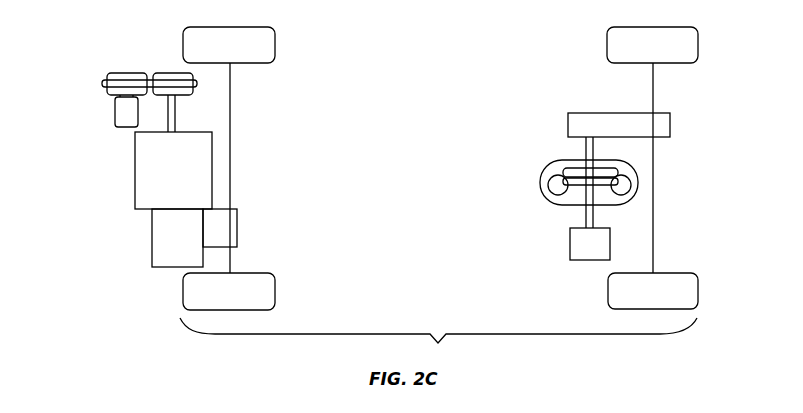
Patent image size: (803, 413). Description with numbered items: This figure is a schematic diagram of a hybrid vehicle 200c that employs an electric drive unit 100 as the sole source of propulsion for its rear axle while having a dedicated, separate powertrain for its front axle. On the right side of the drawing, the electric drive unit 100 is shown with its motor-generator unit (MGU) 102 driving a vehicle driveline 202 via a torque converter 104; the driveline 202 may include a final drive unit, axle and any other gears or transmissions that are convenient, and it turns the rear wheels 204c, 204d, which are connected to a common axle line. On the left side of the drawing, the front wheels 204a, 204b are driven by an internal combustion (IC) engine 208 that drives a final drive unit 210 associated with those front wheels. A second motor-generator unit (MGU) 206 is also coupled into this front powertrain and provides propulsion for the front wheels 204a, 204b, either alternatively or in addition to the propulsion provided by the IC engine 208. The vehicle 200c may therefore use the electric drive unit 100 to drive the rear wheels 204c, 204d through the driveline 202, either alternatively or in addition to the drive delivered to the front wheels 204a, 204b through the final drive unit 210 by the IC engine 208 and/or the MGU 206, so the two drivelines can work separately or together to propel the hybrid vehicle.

The vehicle 200c is at (78, 89).
The front wheel 204a is at (276, 58).
The front wheel 204b is at (275, 279).
The rear wheel 204c is at (698, 58).
The rear wheel 204d is at (698, 277).
The second motor-generator unit 206 is at (115, 112).
The internal combustion engine 208 is at (188, 181).
The final drive unit 210 is at (237, 221).
The electric drive unit 100 is at (505, 222).
The vehicle driveline 202 is at (575, 113).
The torque converter 104 is at (543, 171).
The motor-generator unit 102 is at (570, 243).